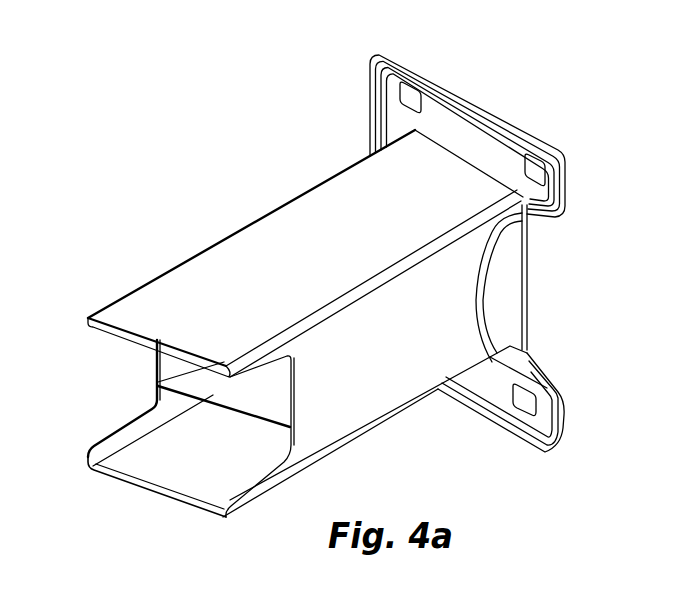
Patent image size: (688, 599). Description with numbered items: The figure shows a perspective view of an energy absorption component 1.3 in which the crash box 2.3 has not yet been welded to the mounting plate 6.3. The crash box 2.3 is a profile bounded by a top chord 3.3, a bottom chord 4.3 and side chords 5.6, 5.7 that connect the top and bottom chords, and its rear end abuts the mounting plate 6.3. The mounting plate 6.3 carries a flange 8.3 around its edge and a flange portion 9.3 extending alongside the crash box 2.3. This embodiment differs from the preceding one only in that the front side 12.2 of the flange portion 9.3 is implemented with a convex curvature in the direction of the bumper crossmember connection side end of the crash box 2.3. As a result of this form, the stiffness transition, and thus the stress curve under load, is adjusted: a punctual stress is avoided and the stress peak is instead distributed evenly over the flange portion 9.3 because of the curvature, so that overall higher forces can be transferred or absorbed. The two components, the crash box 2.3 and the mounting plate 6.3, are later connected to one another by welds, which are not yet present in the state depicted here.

The energy absorption component 1.3 is at (215, 195).
The crash box 2.3 is at (340, 210).
The top chord 3.3 is at (338, 256).
The bottom chord 4.3 is at (405, 418).
The side chord 5.6 is at (423, 353).
The side chord 5.7 is at (150, 351).
The mounting plate 6.3 is at (507, 152).
The flange 8.3 is at (436, 76).
The flange portion 9.3 is at (518, 313).
The front side 12.2 is at (469, 334).